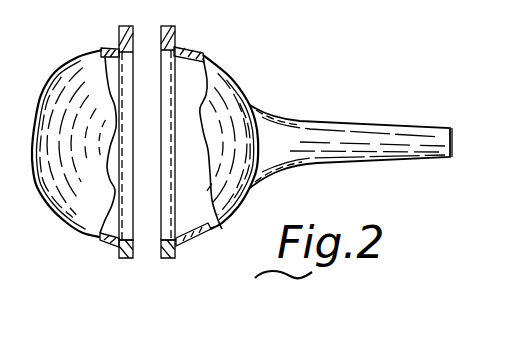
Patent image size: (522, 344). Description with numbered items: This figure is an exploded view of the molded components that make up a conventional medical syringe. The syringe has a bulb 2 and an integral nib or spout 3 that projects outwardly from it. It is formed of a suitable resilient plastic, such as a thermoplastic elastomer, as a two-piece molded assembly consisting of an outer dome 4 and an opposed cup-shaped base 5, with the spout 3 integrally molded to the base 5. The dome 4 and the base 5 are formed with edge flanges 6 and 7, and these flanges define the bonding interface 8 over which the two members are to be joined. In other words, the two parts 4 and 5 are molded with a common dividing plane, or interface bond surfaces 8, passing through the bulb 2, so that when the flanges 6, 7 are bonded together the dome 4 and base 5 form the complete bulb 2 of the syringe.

The bulb 2 is at (82, 229).
The nib or spout 3 is at (368, 158).
The outer dome 4 is at (78, 149).
The cup-shaped base 5 is at (236, 171).
The edge flange 6 is at (119, 31).
The edge flange 7 is at (175, 36).
The bonding interface 8 is at (135, 241).